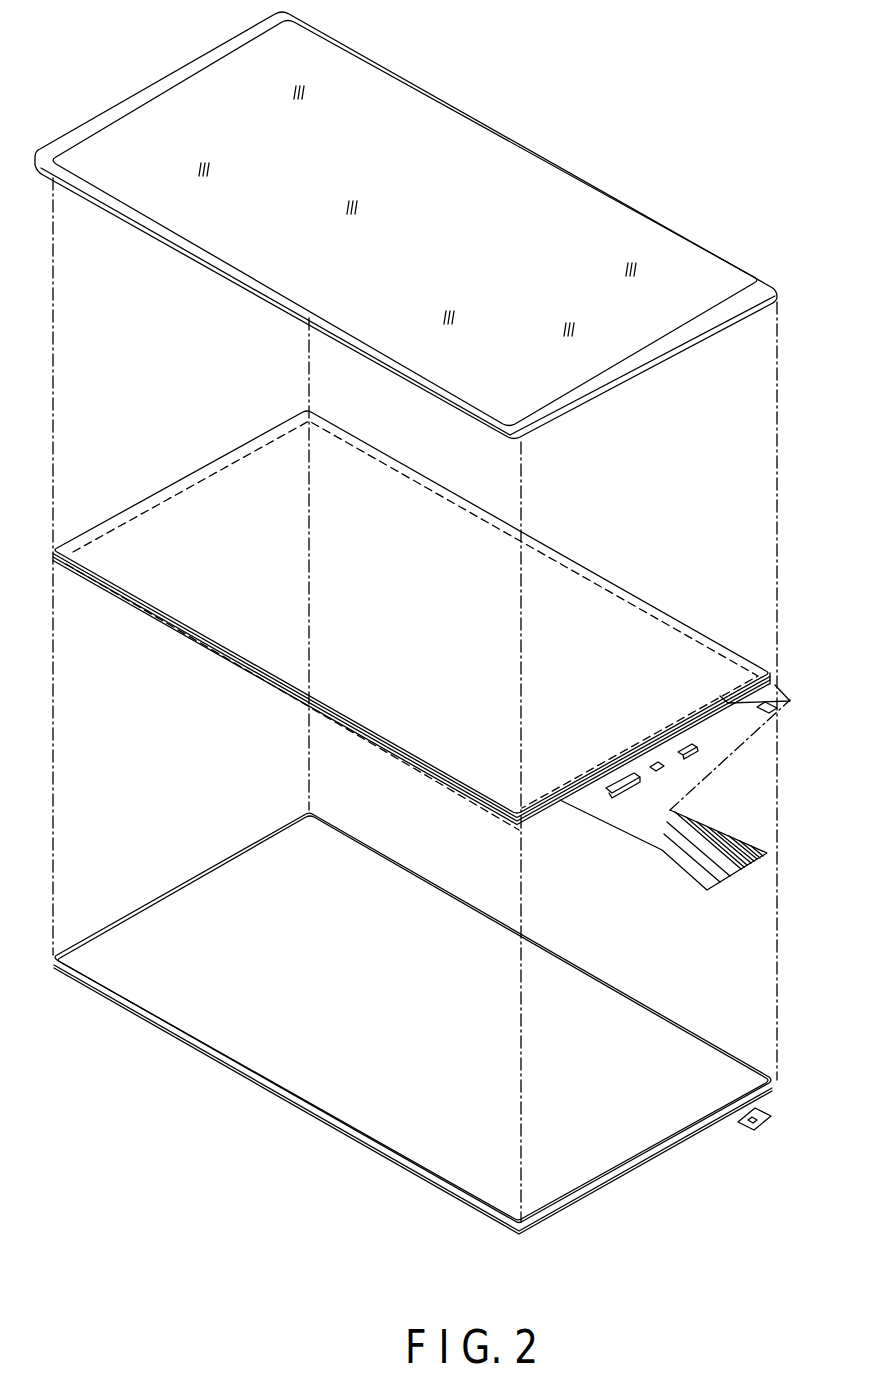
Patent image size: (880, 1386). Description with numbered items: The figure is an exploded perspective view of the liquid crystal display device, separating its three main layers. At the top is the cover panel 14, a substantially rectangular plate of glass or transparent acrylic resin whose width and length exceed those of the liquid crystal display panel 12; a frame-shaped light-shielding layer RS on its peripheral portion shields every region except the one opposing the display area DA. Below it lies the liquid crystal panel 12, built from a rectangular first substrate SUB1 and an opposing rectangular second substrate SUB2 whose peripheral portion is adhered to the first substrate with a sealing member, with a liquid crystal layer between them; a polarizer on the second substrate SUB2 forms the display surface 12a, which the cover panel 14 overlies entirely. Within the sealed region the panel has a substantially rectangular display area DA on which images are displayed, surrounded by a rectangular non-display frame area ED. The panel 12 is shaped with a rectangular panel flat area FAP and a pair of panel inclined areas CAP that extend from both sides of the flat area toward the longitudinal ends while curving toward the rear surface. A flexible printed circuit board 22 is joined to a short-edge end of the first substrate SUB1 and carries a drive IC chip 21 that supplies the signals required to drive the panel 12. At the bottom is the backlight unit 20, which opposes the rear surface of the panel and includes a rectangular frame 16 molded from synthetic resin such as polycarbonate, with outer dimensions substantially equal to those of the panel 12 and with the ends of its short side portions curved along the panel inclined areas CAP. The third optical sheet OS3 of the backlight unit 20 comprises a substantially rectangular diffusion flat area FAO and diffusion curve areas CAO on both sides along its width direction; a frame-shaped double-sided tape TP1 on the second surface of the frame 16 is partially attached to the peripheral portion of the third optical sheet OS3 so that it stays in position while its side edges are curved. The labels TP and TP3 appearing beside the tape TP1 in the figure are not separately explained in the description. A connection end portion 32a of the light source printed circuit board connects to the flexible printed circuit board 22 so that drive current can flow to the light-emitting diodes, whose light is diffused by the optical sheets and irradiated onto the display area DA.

The liquid crystal display panel 12 is at (421, 658).
The display surface 12a is at (411, 685).
The cover panel 14 is at (406, 223).
The frame 16 is at (436, 1033).
The backlight unit 20 is at (436, 1033).
The drive IC chip 21 is at (630, 790).
The flexible printed circuit board 22 is at (640, 817).
The connection end portion 32a is at (765, 1118).
The light-shielding layer RS is at (172, 77).
The panel flat area FAP is at (380, 540).
The panel inclined area CAP is at (297, 678).
The display area DA is at (248, 633).
The frame area ED is at (367, 727).
The first substrate SUB1 is at (538, 803).
The second substrate SUB2 is at (411, 710).
The third optical sheet OS3 is at (207, 905).
The double-sided tape TP1 is at (108, 918).
The third touch panel portion TP3 is at (635, 1140).
The touch panel TP is at (413, 1051).
The diffusion curve area CAO is at (122, 1005).
The diffusion flat area FAO is at (401, 1017).